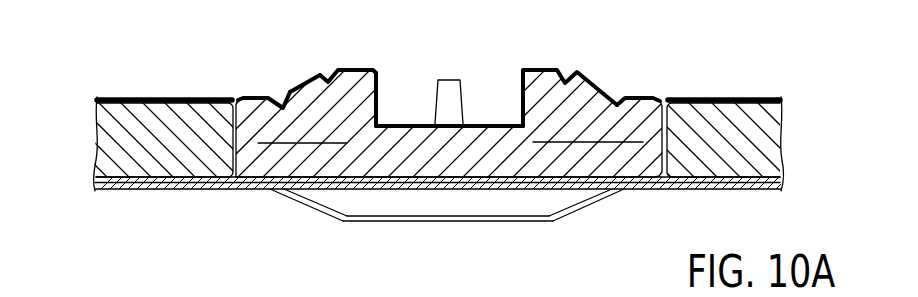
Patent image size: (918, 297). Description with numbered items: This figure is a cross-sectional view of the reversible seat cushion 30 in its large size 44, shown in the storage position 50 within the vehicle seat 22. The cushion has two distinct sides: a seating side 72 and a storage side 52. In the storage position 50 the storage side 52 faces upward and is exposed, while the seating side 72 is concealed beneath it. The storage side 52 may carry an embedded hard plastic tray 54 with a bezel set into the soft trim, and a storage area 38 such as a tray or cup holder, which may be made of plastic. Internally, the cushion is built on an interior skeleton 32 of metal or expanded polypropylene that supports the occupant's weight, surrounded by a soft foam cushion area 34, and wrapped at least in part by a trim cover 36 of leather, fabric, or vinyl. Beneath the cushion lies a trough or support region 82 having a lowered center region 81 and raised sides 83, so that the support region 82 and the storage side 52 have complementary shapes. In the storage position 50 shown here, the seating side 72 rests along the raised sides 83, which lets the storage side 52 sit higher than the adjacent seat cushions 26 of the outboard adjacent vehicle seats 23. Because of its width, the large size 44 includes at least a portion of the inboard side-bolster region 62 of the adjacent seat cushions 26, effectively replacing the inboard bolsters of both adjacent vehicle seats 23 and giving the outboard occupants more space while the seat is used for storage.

The vehicle seat 22 is at (248, 89).
The adjacent vehicle seats 23 is at (118, 93).
The adjacent seat cushions 26 is at (143, 97).
The reversible seat cushion 30 is at (600, 76).
The interior skeleton 32 is at (613, 145).
The cushion area 34 is at (338, 157).
The trim cover 36 is at (555, 184).
The storage area 38 is at (408, 123).
The large size 44 is at (284, 219).
The storage position 50 is at (173, 75).
The storage side 52 is at (306, 83).
The hard plastic tray 54 is at (493, 123).
The inboard side-bolster region 62 is at (318, 73).
The seating side 72 is at (593, 186).
The lowered center region 81 is at (377, 221).
The support region 82 is at (457, 230).
The raised sides 83 is at (262, 187).